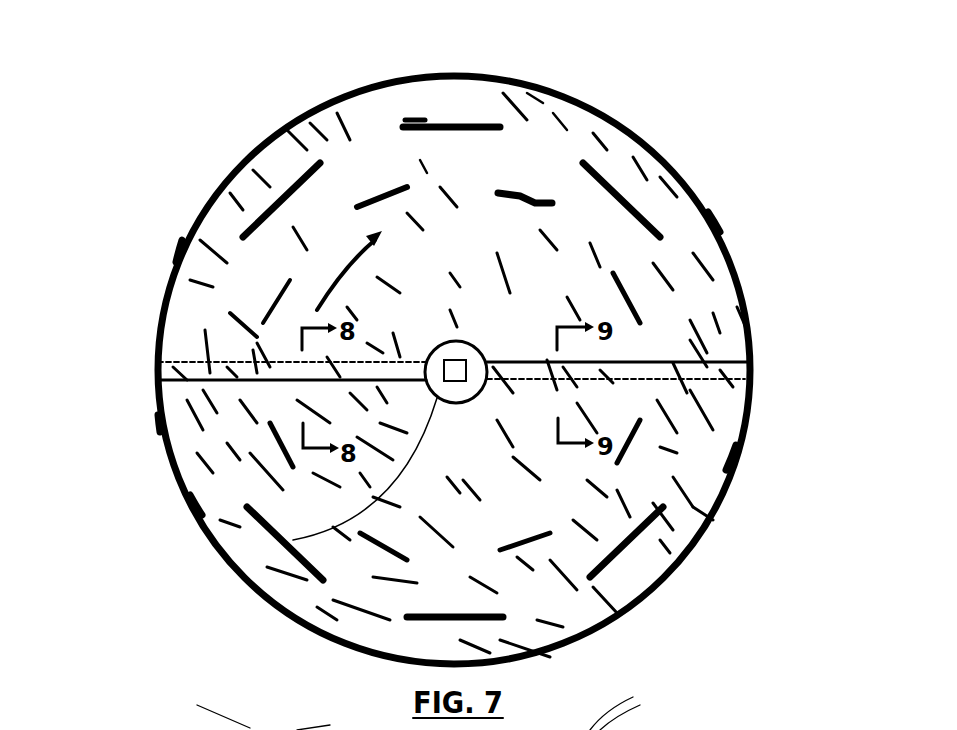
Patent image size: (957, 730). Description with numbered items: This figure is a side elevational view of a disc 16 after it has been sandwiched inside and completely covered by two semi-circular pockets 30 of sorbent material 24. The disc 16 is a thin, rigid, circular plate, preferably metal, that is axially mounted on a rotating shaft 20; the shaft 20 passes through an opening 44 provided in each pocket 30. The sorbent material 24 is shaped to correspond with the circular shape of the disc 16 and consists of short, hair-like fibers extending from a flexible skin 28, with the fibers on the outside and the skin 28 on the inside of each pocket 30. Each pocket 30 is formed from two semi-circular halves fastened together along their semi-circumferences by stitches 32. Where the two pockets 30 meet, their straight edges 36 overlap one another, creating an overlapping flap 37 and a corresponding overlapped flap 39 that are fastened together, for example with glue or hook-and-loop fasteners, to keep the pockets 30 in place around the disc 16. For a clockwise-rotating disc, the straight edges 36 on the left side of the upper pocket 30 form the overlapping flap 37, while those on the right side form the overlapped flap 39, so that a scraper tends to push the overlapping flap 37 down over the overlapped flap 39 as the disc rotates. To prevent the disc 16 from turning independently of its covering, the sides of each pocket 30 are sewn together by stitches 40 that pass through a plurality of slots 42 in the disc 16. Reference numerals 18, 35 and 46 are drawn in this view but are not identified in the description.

The disc 16 is at (637, 133).
The second body 18 is at (635, 704).
The rotating shaft 20 is at (330, 724).
The sorbent material 24 is at (667, 277).
The skin 28 is at (201, 710).
The pocket 30 is at (185, 250).
The stitches 32 is at (477, 353).
The rim portion 35 is at (758, 457).
The straight edges 36 is at (293, 383).
The overlapping flap 37 is at (158, 372).
The overlapped flap 39 is at (158, 423).
The stitches 40 is at (530, 197).
The slots 42 is at (551, 188).
The opening 44 is at (293, 540).
The channel 46 is at (413, 117).